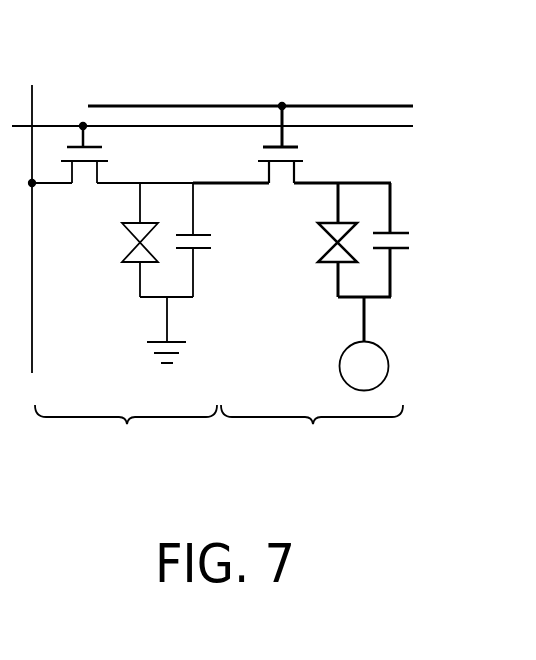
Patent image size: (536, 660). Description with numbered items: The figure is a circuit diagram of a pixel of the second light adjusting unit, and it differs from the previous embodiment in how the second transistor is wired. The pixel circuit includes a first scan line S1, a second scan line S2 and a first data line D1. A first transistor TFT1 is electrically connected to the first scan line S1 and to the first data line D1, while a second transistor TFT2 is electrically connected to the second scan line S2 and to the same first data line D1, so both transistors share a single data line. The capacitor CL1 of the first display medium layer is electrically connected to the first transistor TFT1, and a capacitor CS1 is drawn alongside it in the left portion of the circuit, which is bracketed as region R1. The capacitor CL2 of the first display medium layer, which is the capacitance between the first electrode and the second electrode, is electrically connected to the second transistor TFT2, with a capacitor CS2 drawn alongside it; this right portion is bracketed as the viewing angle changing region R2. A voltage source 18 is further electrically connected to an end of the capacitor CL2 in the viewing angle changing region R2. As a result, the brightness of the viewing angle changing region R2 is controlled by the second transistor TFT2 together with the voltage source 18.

The first scan line S1 is at (57, 121).
The second scan line S2 is at (126, 104).
The first data line D1 is at (34, 323).
The first transistor TFT1 is at (112, 154).
The second transistor TFT2 is at (292, 144).
The capacitor of the first display medium layer CL1 is at (133, 240).
The capacitor of the first display medium layer CL2 is at (330, 240).
The storage capacitor CS1 is at (209, 240).
The storage capacitor CS2 is at (407, 240).
The voltage source 18 is at (386, 348).
The region R1 is at (126, 432).
The viewing angle changing region R2 is at (312, 433).